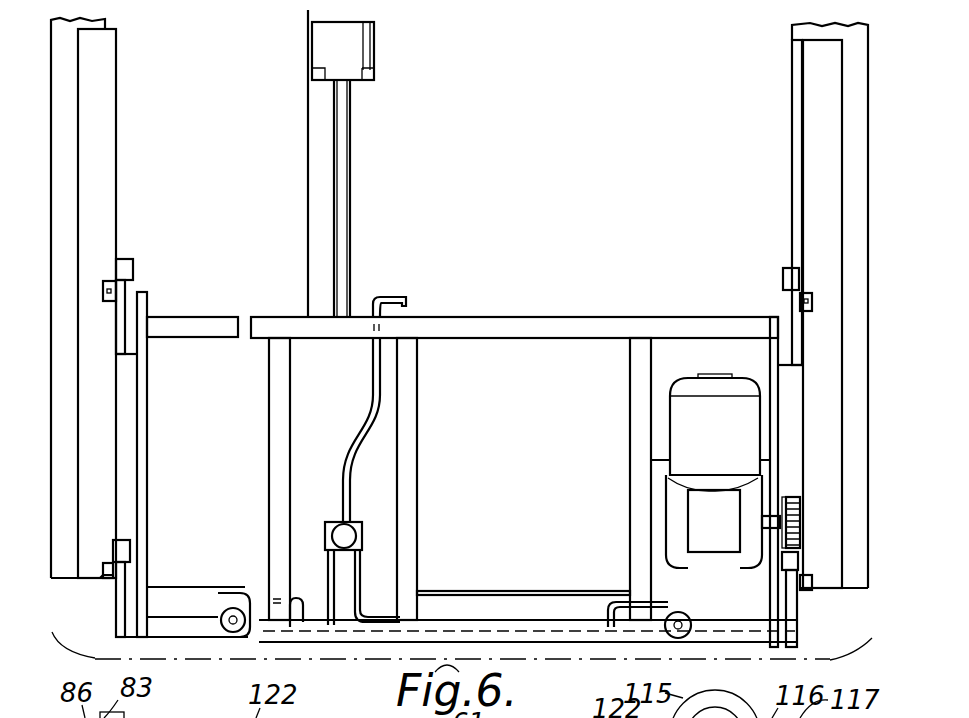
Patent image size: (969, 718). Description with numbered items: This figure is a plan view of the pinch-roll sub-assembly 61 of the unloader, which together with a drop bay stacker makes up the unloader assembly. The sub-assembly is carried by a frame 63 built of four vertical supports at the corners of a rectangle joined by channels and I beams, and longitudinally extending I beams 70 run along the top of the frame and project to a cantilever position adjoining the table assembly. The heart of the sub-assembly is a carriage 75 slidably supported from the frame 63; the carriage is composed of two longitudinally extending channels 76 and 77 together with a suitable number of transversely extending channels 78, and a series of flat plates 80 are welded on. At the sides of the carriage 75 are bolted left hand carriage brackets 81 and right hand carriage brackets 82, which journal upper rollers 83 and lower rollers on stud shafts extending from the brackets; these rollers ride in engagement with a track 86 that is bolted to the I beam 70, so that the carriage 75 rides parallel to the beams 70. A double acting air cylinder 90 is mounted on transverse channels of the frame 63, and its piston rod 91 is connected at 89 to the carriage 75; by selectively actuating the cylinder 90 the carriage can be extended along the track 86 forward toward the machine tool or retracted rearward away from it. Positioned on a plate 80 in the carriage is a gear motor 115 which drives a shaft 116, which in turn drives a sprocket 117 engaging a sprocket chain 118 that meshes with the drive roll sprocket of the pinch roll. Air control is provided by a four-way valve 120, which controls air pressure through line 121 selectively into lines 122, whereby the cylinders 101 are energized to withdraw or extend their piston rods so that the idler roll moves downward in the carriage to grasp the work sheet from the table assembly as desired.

The pinch-roll sub-assembly 61 is at (456, 449).
The frame 63 is at (459, 302).
The longitudinally extending I beam 70 is at (62, 42).
The carriage 75 is at (456, 466).
The longitudinally extending channel 76 is at (507, 325).
The longitudinally extending channel 77 is at (566, 625).
The transversely extending channel 78 is at (275, 395).
The flat plate 80 is at (510, 511).
The left hand carriage bracket 81 is at (125, 290).
The right hand carriage bracket 82 is at (790, 322).
The upper roller 83 is at (106, 286).
The track 86 is at (99, 128).
The connection of piston rod to carriage 89 is at (352, 325).
The double acting air cylinder 90 is at (350, 55).
The piston rod 91 is at (347, 155).
The cylinder 101 is at (232, 608).
The gear motor 115 is at (708, 398).
The shaft 116 is at (763, 520).
The sprocket 117 is at (806, 492).
The sprocket chain 118 is at (800, 540).
The four-way valve 120 is at (338, 530).
The air line 121 is at (373, 395).
The air line 122 is at (356, 574).